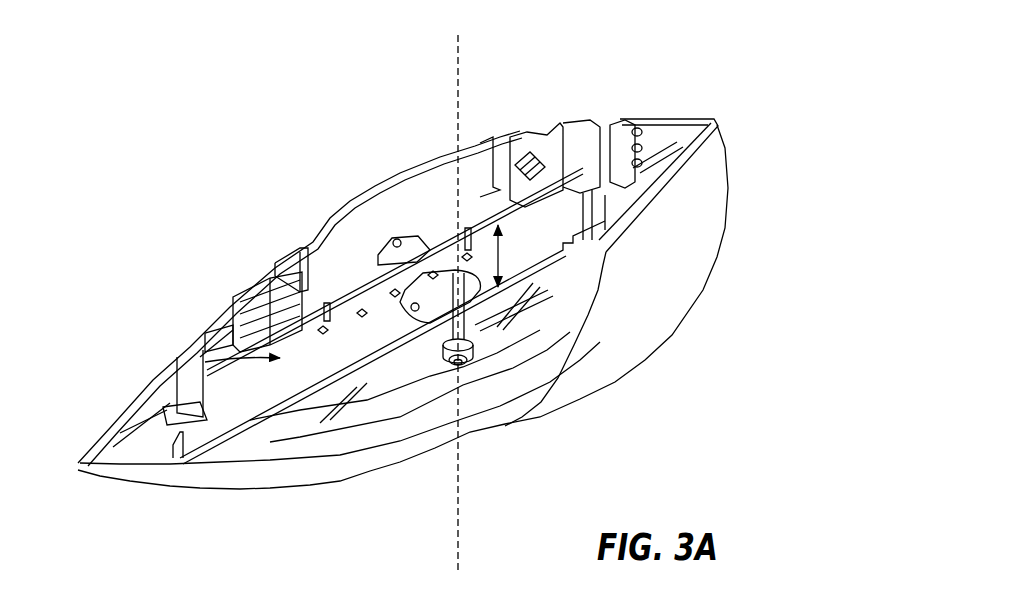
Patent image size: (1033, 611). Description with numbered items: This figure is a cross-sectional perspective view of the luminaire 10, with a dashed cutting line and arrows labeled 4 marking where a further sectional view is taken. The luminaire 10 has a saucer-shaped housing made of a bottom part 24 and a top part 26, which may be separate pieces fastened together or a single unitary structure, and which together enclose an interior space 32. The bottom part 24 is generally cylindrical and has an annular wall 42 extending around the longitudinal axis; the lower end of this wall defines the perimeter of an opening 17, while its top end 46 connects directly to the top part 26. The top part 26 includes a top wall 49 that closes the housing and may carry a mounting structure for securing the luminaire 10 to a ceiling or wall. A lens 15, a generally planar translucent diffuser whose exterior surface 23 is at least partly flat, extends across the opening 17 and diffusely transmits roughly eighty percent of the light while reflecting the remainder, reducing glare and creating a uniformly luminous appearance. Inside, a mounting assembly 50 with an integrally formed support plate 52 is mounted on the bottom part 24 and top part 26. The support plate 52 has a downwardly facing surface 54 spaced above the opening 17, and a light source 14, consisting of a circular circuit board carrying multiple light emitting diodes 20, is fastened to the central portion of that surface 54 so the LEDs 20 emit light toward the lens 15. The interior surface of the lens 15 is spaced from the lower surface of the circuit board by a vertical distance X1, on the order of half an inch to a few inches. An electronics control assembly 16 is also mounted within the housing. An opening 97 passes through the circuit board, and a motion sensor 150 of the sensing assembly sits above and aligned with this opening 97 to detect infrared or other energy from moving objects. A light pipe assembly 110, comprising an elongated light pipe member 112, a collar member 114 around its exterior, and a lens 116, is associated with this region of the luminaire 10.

The luminaire 10 is at (195, 128).
The light source 14 is at (547, 214).
The lens 15 is at (528, 266).
The electronics control assembly 16 is at (350, 266).
The opening 17 is at (566, 305).
The light emitting diodes 20 is at (268, 393).
The exterior surface 23 is at (360, 318).
The bottom part 24 is at (683, 285).
The top part 26 is at (362, 198).
The interior space 32 is at (247, 382).
The annular wall 42 is at (680, 139).
The top end 46 is at (716, 124).
The top wall 49 is at (425, 158).
The mounting assembly 50 is at (375, 222).
The support plate 52 is at (223, 375).
The downwardly facing surface 54 is at (246, 385).
The opening 97 is at (425, 308).
The light pipe assembly 110 is at (484, 334).
The elongated light pipe member 112 is at (522, 338).
The collar member 114 is at (432, 302).
The lens 116 is at (470, 366).
The motion sensor 150 is at (397, 352).
The section line 4 is at (458, 35).
The vertical distance X1 is at (532, 134).